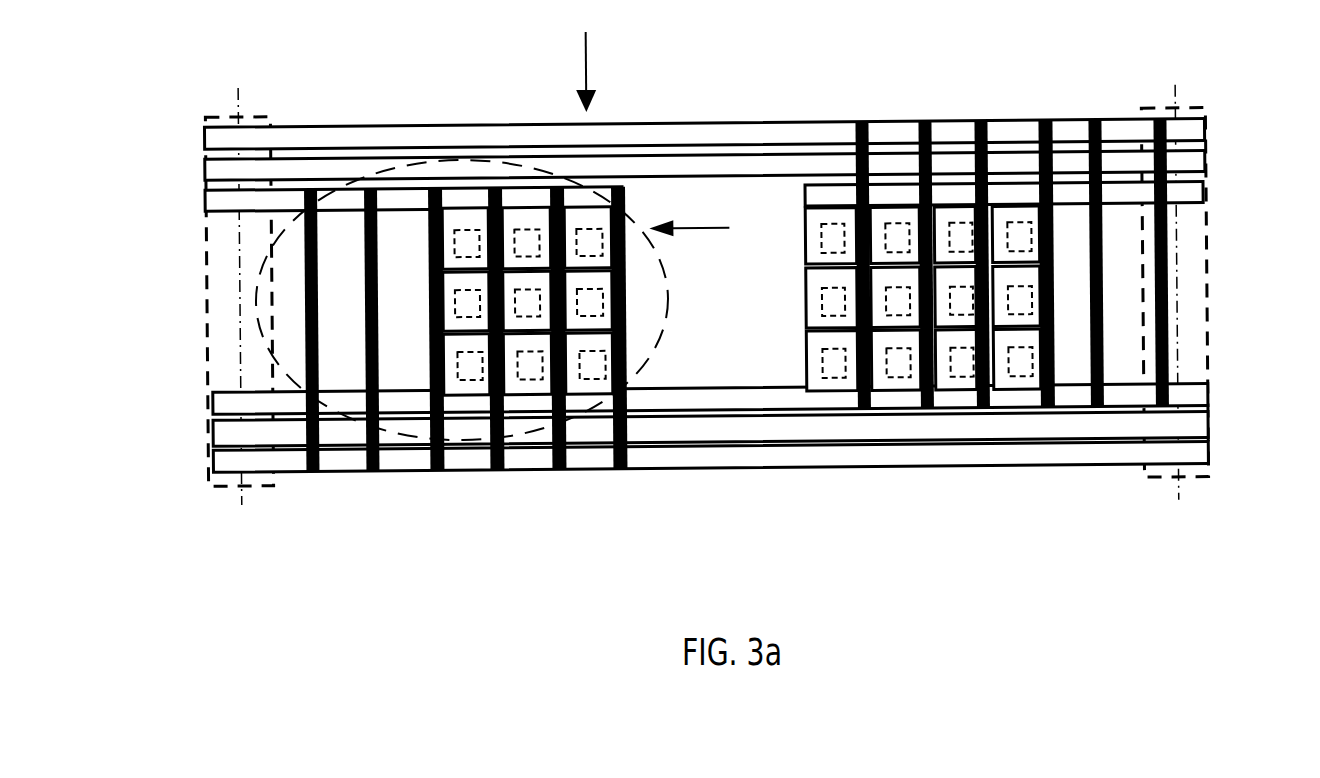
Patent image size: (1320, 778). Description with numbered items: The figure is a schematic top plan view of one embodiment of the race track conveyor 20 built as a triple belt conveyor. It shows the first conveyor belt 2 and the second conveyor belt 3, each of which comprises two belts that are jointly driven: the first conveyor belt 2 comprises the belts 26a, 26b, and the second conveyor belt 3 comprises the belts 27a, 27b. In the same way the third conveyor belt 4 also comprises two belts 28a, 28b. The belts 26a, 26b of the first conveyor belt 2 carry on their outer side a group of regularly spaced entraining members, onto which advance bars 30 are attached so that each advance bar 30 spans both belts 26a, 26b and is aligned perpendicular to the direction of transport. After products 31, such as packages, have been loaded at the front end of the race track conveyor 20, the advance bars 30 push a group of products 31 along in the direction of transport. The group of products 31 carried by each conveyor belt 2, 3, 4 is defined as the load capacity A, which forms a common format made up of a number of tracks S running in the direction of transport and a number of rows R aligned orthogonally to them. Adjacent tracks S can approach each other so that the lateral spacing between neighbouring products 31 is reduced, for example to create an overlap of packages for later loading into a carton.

The race track conveyor 20 is at (412, 80).
The first conveyor belt 2 is at (508, 500).
The second conveyor belt 3 is at (946, 497).
The third conveyor belt 4 is at (835, 429).
The belt 26a is at (226, 458).
The belt 26b is at (219, 198).
The belt 27a is at (1200, 395).
The belt 27b is at (1195, 132).
The belt 28a is at (1200, 427).
The belt 28b is at (1195, 165).
The advance bar 30 is at (304, 282).
The product 31 is at (457, 233).
The load capacity A is at (663, 327).
The track S is at (700, 228).
The row R is at (588, 61).